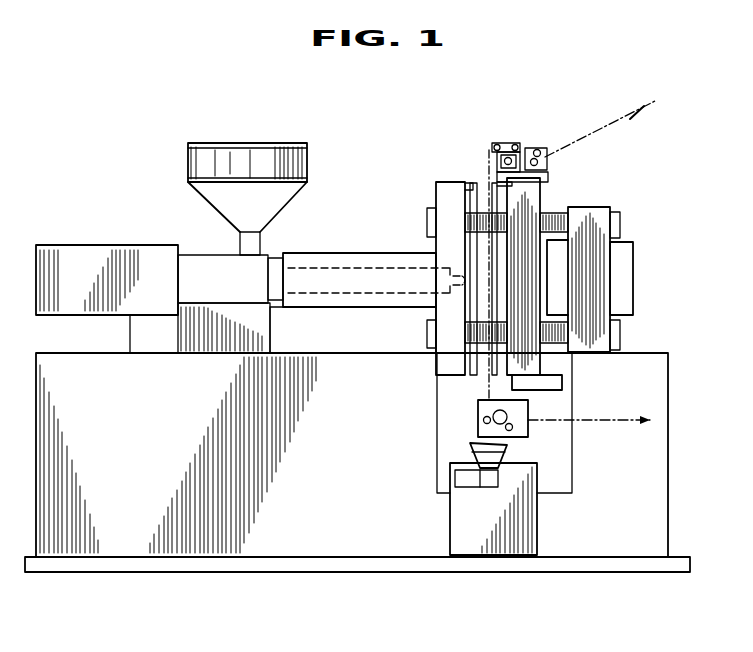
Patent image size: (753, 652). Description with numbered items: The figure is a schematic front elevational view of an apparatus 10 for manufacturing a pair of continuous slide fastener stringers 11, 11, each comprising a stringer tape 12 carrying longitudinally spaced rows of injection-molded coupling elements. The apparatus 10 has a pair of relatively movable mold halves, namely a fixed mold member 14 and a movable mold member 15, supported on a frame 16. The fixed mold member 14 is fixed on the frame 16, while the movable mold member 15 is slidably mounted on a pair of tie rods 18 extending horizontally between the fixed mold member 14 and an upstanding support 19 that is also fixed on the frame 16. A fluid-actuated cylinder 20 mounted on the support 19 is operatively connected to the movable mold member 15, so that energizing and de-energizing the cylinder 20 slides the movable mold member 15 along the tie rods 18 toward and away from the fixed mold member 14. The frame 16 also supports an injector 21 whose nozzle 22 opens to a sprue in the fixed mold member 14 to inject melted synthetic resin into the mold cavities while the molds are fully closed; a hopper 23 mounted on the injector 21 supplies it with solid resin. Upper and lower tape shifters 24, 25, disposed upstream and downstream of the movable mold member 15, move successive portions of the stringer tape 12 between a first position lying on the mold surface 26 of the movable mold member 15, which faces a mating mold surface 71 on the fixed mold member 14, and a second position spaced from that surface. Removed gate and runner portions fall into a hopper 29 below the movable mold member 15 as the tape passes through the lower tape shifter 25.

The apparatus 10 is at (155, 185).
The slide fastener stringers 11 is at (620, 429).
The stringer tape 12 is at (593, 128).
The fixed mold member 14 is at (440, 197).
The movable mold member 15 is at (527, 204).
The frame 16 is at (370, 535).
The tie rods 18 is at (555, 215).
The upstanding support 19 is at (594, 287).
The fluid-actuated cylinder 20 is at (623, 257).
The injector 21 is at (202, 270).
The nozzle 22 is at (463, 273).
The hopper 23 is at (247, 150).
The upper tape shifter 24 is at (518, 128).
The lower tape shifter 25 is at (537, 438).
The mold surface 26 is at (489, 150).
The hopper 29 is at (470, 447).
The mating mold surface 71 is at (478, 190).